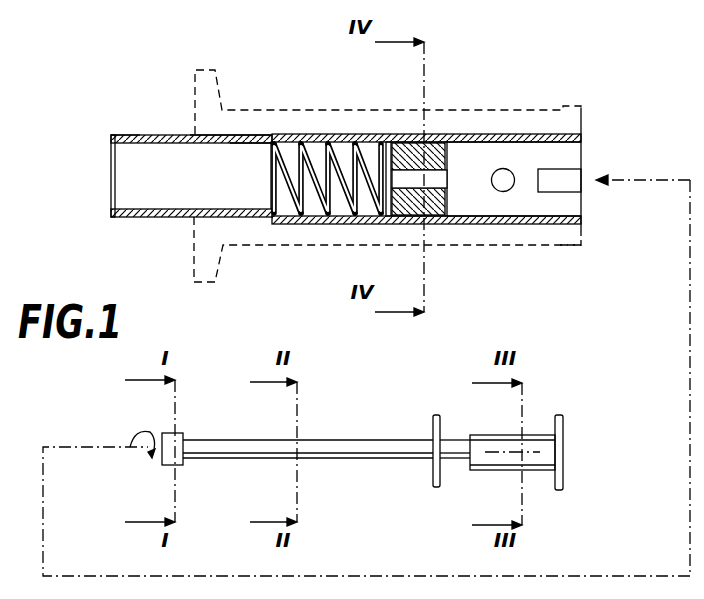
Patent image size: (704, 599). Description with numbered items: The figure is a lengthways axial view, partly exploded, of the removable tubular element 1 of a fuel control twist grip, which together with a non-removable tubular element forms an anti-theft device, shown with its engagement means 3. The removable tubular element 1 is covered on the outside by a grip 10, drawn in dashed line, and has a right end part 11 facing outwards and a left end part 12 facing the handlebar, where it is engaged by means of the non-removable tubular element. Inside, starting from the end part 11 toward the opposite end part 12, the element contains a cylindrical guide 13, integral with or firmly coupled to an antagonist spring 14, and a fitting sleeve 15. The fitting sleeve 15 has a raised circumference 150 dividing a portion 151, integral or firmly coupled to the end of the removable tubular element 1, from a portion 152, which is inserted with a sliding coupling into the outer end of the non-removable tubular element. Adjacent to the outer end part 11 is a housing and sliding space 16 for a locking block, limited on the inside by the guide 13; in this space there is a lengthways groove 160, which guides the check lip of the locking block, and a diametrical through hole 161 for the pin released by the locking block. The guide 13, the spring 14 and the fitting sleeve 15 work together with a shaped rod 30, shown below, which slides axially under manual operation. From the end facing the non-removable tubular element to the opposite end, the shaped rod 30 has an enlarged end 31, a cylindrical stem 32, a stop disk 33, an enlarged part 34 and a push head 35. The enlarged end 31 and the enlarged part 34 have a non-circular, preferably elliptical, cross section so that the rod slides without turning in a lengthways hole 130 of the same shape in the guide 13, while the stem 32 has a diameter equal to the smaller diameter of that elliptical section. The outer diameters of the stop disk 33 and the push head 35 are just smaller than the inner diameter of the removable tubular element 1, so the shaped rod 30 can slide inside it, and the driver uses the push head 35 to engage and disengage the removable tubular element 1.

The removable tubular element 1 is at (531, 131).
The grip 10 is at (555, 238).
The right end part 11 is at (568, 137).
The left end part 12 is at (197, 133).
The cylindrical guide 13 is at (448, 145).
The lengthways hole 130 is at (448, 178).
The antagonist spring 14 is at (315, 195).
The fitting sleeve 15 is at (130, 218).
The raised circumference 150 is at (190, 133).
The portion 151 is at (245, 134).
The portion 152 is at (125, 136).
The housing and sliding space 16 is at (553, 144).
The lengthways groove 160 is at (558, 181).
The diametrical through hole 161 is at (505, 185).
The engagement means 3 is at (566, 455).
The shaped rod 30 is at (405, 458).
The enlarged end 31 is at (170, 465).
The stem 32 is at (353, 447).
The stop disk 33 is at (433, 430).
The enlarged part 34 is at (543, 460).
The push head 35 is at (563, 425).